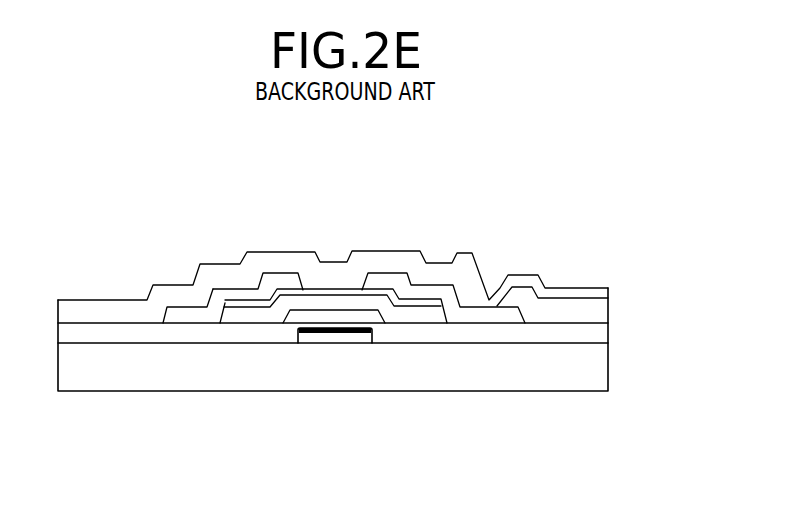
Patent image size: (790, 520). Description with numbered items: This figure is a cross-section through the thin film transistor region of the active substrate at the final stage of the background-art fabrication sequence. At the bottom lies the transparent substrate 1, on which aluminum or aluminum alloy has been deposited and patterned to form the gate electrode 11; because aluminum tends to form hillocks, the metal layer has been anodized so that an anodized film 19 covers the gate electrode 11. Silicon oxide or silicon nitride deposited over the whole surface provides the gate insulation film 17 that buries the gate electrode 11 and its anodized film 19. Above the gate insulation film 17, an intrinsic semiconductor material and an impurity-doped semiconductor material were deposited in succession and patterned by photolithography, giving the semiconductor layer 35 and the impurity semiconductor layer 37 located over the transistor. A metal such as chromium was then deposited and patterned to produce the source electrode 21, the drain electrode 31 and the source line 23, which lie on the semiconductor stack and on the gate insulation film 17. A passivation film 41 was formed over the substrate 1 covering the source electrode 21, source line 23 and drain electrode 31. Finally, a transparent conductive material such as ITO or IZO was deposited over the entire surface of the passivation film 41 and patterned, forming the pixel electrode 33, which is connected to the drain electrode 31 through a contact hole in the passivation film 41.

The transparent substrate 1 is at (594, 360).
The gate electrode 11 is at (313, 338).
The gate insulation film 17 is at (593, 333).
The anodized film 19 is at (356, 333).
The source electrode 21 is at (283, 281).
The source line 23 is at (176, 314).
The drain electrode 31 is at (490, 312).
The pixel electrode 33 is at (556, 296).
The semiconductor layer 35 is at (333, 302).
The impurity semiconductor layer 37 is at (377, 290).
The passivation film 41 is at (443, 271).